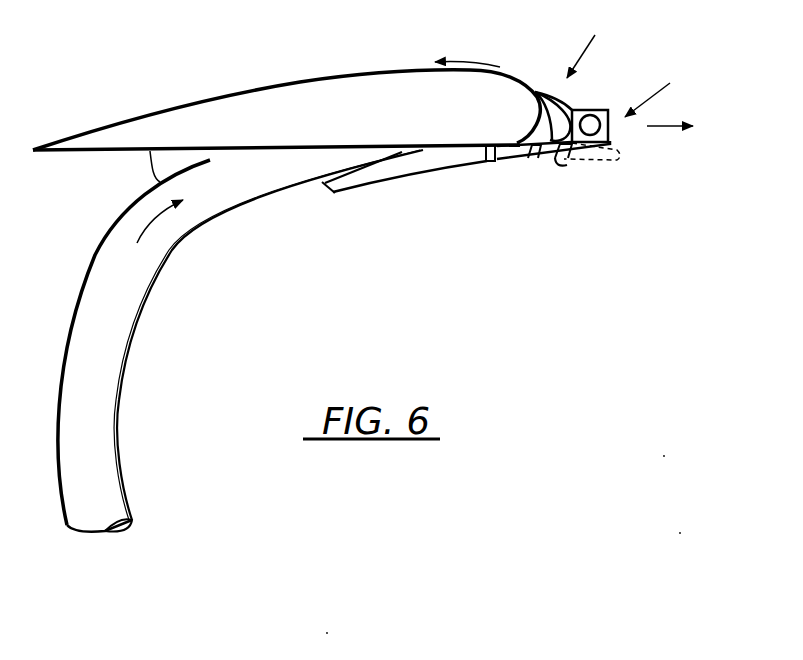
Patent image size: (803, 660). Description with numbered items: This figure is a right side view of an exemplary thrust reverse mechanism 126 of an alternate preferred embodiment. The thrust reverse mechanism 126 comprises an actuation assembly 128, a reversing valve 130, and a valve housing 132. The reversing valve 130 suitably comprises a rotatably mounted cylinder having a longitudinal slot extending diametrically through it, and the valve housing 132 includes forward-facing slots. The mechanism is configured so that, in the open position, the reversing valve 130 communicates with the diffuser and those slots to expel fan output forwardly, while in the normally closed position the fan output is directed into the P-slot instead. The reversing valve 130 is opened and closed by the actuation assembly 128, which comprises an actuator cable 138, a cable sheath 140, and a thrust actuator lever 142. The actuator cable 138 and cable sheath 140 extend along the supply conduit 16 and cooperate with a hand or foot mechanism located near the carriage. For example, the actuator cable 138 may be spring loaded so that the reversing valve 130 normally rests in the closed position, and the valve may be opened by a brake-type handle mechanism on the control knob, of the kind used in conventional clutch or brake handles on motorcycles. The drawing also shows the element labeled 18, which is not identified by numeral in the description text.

The supply conduit 16 is at (116, 463).
The wing 18 is at (295, 75).
The thrust reverse mechanism 126 is at (578, 183).
The actuation assembly 128 is at (492, 170).
The reversing valve 130 is at (600, 110).
The valve housing 132 is at (580, 108).
The actuator cable 138 is at (515, 158).
The cable sheath 140 is at (370, 177).
The thrust actuator lever 142 is at (567, 165).